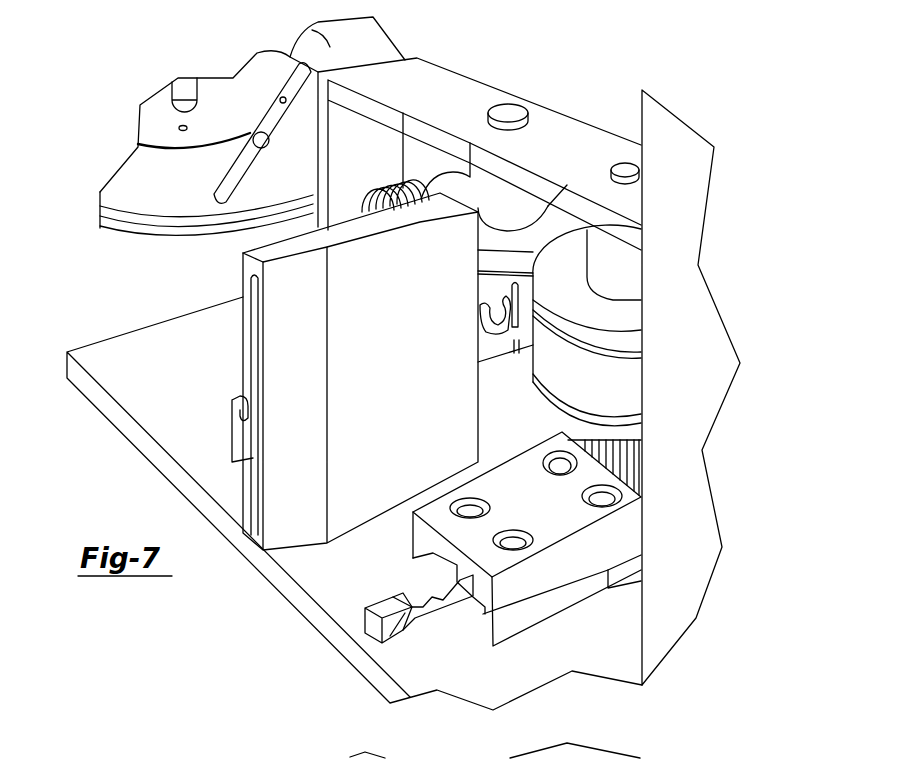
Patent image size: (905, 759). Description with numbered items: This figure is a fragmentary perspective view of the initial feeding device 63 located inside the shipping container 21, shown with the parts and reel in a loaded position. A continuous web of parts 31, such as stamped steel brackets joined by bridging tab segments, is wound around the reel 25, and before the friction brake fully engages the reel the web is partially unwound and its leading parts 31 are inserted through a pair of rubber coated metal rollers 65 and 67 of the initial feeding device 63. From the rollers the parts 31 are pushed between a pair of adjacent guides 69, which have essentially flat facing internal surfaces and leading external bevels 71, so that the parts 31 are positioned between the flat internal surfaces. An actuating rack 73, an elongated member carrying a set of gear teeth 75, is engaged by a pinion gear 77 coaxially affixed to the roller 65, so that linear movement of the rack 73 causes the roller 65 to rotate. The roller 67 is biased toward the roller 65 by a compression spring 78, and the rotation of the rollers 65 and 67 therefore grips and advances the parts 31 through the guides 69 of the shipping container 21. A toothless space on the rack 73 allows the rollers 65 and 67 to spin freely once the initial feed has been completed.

The shipping container 21 is at (695, 372).
The part reel 25 is at (140, 177).
The parts 31 is at (245, 440).
The initial feeding device 63 is at (216, 285).
The roller 65 is at (628, 315).
The roller 67 is at (452, 187).
The guides 69 is at (340, 328).
The leading external bevels 71 is at (290, 497).
The actuating rack 73 is at (370, 627).
The gear teeth 75 is at (400, 593).
The pinion gear 77 is at (627, 462).
The compression spring 78 is at (385, 175).